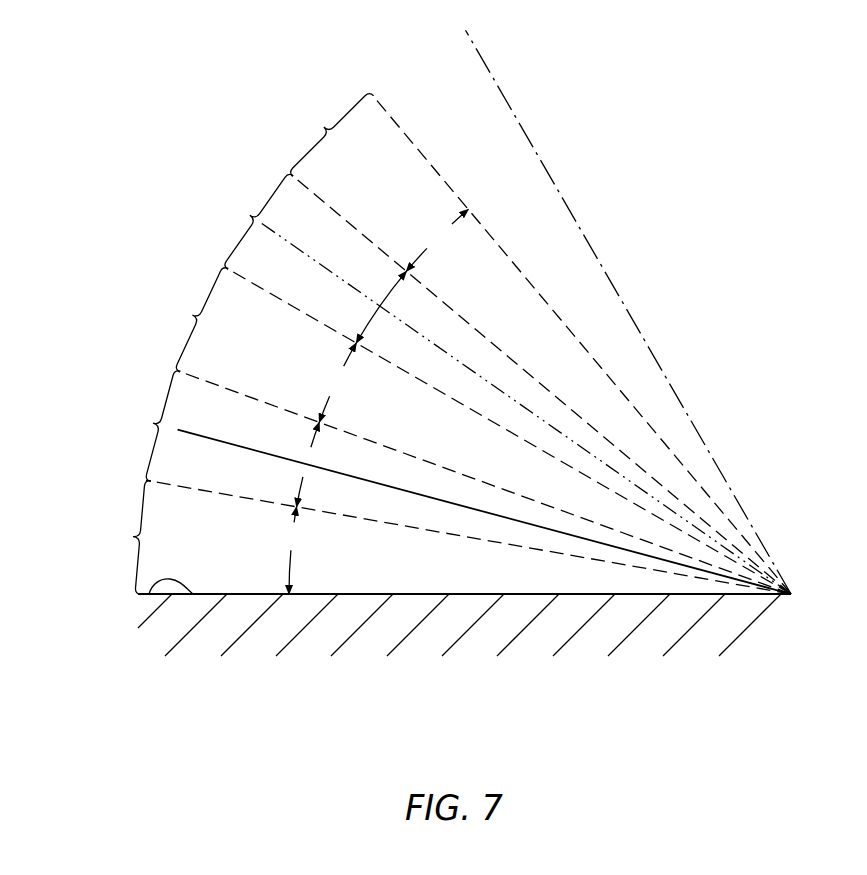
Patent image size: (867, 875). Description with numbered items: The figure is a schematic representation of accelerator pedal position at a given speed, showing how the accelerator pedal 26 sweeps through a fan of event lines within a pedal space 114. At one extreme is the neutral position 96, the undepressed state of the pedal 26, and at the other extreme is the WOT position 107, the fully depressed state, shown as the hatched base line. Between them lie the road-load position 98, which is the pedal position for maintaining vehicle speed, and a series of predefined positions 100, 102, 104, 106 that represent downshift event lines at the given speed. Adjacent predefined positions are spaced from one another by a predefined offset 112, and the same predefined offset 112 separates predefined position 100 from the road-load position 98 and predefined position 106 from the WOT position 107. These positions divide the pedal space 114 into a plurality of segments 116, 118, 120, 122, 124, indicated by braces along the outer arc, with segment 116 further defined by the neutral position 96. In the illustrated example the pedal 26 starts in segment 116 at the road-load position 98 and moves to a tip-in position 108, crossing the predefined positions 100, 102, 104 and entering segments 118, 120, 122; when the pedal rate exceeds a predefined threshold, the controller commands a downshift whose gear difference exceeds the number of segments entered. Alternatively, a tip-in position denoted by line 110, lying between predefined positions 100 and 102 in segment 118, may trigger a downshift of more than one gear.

The accelerator pedal 26 is at (182, 431).
The neutral position 96 is at (496, 72).
The road-load position 98 is at (396, 120).
The predefined position 100 is at (334, 207).
The predefined position 102 is at (272, 295).
The predefined position 104 is at (232, 390).
The predefined position 106 is at (208, 492).
The WOT position 107 is at (150, 595).
The tip-in position 108 is at (205, 437).
The tip-in position line 110 is at (287, 218).
The predefined offset 112 is at (353, 306).
The pedal space 114 is at (158, 92).
The segment 116 is at (328, 132).
The segment 118 is at (250, 218).
The segment 120 is at (188, 317).
The segment 122 is at (145, 425).
The segment 124 is at (120, 537).